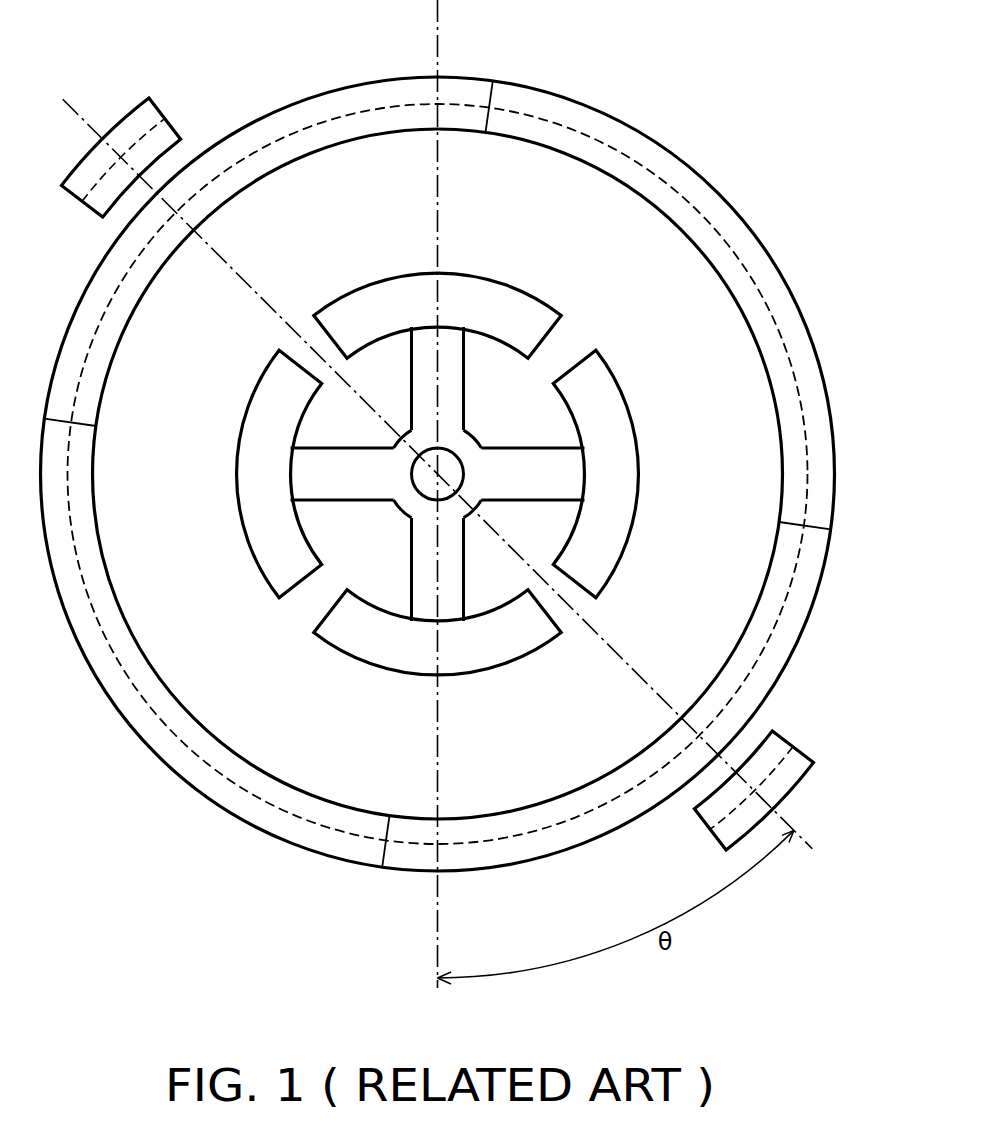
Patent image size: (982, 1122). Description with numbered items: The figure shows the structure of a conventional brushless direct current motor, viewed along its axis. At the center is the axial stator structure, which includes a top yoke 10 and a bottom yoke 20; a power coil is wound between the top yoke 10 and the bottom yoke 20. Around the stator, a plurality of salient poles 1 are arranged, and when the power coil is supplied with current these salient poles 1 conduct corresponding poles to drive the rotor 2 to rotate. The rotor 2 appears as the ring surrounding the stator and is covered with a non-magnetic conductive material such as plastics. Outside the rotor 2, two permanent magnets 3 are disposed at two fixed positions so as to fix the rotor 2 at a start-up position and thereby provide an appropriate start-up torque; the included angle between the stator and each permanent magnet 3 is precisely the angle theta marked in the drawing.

The salient poles 1 is at (375, 292).
The rotor 2 is at (327, 92).
The permanent magnets 3 is at (150, 98).
The top yoke 10 is at (438, 474).
The bottom yoke 20 is at (467, 388).